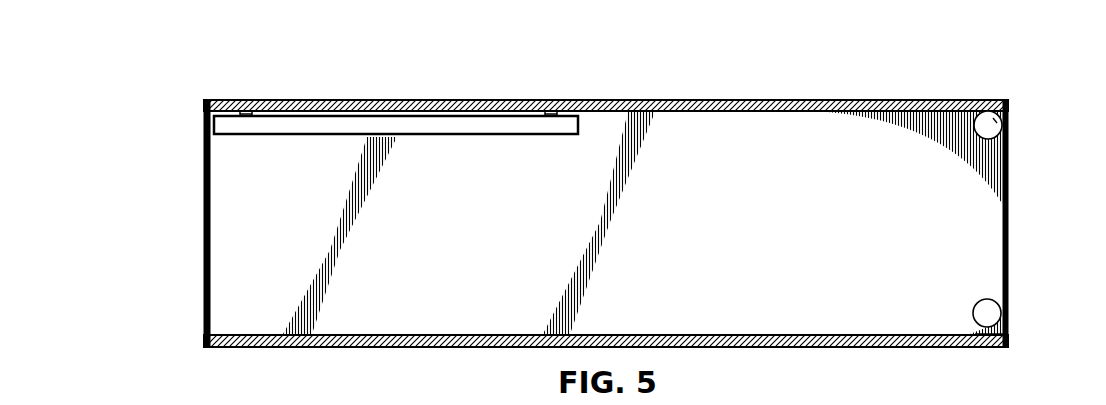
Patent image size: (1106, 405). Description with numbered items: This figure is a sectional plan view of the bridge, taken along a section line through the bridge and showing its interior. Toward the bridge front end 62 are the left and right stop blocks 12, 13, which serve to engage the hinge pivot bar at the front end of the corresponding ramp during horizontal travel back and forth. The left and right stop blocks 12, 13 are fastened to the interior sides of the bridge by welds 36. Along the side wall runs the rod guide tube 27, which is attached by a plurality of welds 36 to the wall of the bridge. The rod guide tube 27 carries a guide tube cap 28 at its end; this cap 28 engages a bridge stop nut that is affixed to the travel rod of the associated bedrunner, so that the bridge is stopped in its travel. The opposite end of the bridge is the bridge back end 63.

The left stop block 12 is at (975, 326).
The right stop block 13 is at (1008, 111).
The rod guide tube 27 is at (490, 108).
The guide tube cap 28 is at (214, 125).
The weld 36 is at (239, 112).
The bridge front end 62 is at (1008, 242).
The bridge back end 63 is at (204, 305).